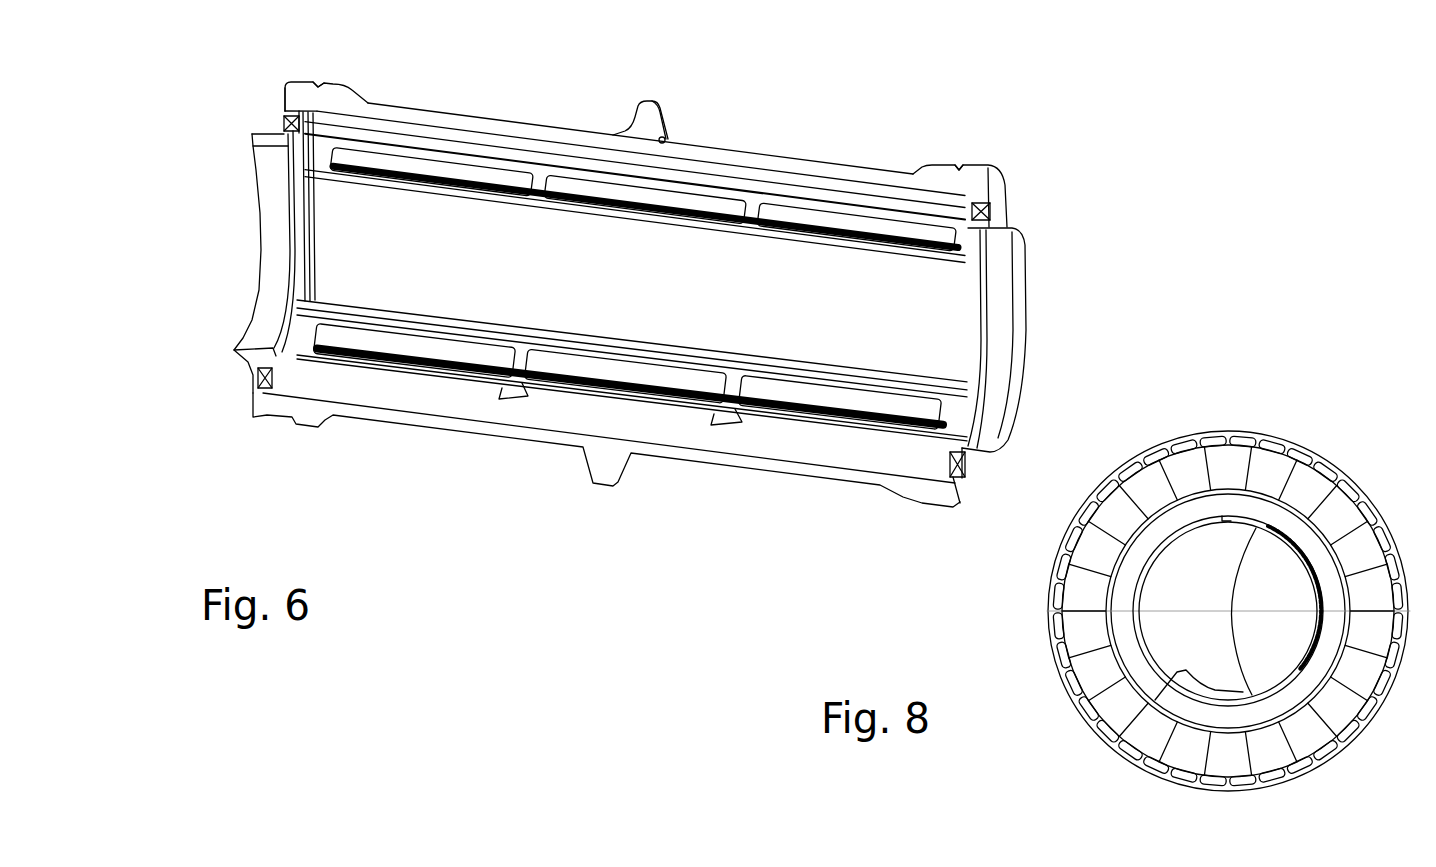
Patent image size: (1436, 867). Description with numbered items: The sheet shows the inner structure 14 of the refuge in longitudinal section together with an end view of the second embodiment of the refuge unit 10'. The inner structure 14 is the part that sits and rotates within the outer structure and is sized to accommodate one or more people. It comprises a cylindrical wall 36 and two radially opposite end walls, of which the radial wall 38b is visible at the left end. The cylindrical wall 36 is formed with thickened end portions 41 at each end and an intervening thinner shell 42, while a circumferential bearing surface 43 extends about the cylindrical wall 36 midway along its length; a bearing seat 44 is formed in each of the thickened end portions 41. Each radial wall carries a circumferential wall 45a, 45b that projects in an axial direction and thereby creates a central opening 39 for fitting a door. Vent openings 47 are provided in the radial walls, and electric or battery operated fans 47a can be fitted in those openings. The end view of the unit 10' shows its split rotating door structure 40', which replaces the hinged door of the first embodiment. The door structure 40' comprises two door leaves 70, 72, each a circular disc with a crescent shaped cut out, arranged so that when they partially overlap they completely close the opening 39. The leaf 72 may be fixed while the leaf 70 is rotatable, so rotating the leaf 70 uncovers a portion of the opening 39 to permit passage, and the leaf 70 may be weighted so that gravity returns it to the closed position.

In FIG. 6, the inner structure 14 is at (823, 133).
In FIG. 6, the cylindrical wall 36 is at (749, 149).
In FIG. 6, the radial wall 38b is at (290, 97).
In FIG. 6, the central opening 39 is at (266, 283).
In FIG. 6, the thickened end portions 41 is at (339, 92).
In FIG. 6, the thinner shell 42 is at (519, 132).
In FIG. 6, the circumferential bearing surface 43 is at (630, 124).
In FIG. 6, the bearing seat 44 is at (306, 82).
In FIG. 6, the circumferential wall 45a is at (1021, 333).
In FIG. 6, the circumferential wall 45b is at (264, 210).
In FIG. 6, the vent openings 47 is at (261, 384).
In FIG. 6, the fans 47a is at (282, 122).
In FIG. 8, the refuge unit 10' is at (1228, 561).
In FIG. 8, the split rotating door structure 40' is at (1157, 611).
In FIG. 8, the door leaf 70 is at (1256, 528).
In FIG. 8, the door leaf 72 is at (1302, 596).